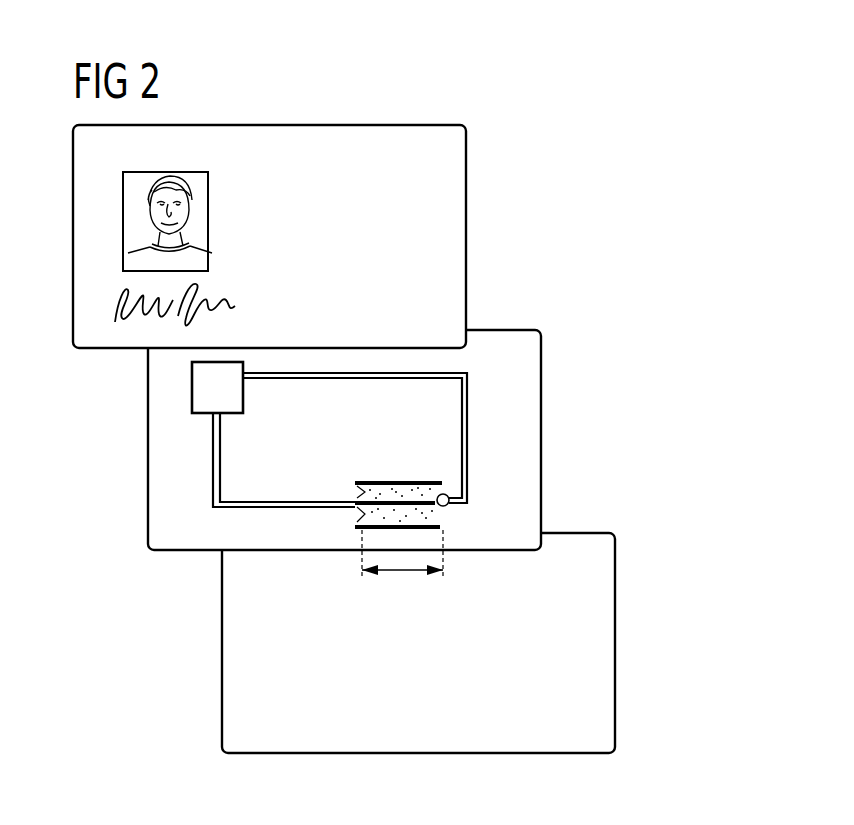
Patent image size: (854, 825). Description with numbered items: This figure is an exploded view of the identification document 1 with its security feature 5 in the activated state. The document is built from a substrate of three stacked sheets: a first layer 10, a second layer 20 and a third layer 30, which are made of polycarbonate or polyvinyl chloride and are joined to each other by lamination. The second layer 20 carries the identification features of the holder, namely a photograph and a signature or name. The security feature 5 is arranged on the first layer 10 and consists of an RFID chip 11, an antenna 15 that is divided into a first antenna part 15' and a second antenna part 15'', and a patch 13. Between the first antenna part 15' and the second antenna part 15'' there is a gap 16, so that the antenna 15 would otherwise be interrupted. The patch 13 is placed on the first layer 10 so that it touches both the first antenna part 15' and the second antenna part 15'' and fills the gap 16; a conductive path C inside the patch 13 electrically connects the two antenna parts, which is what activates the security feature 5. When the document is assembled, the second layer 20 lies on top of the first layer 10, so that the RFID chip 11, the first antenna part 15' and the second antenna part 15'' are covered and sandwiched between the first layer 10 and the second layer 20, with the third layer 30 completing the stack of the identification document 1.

The identification document 1 is at (672, 139).
The first layer 10 is at (558, 436).
The second layer 20 is at (480, 232).
The third layer 30 is at (632, 640).
The security feature 5 is at (293, 501).
The RFID chip 11 is at (222, 381).
The patch 13 is at (366, 481).
The antenna 15 is at (365, 489).
The first antenna part 15' is at (284, 509).
The second antenna part 15'' is at (380, 488).
The gap 16 is at (405, 576).
The conductive path C is at (414, 481).